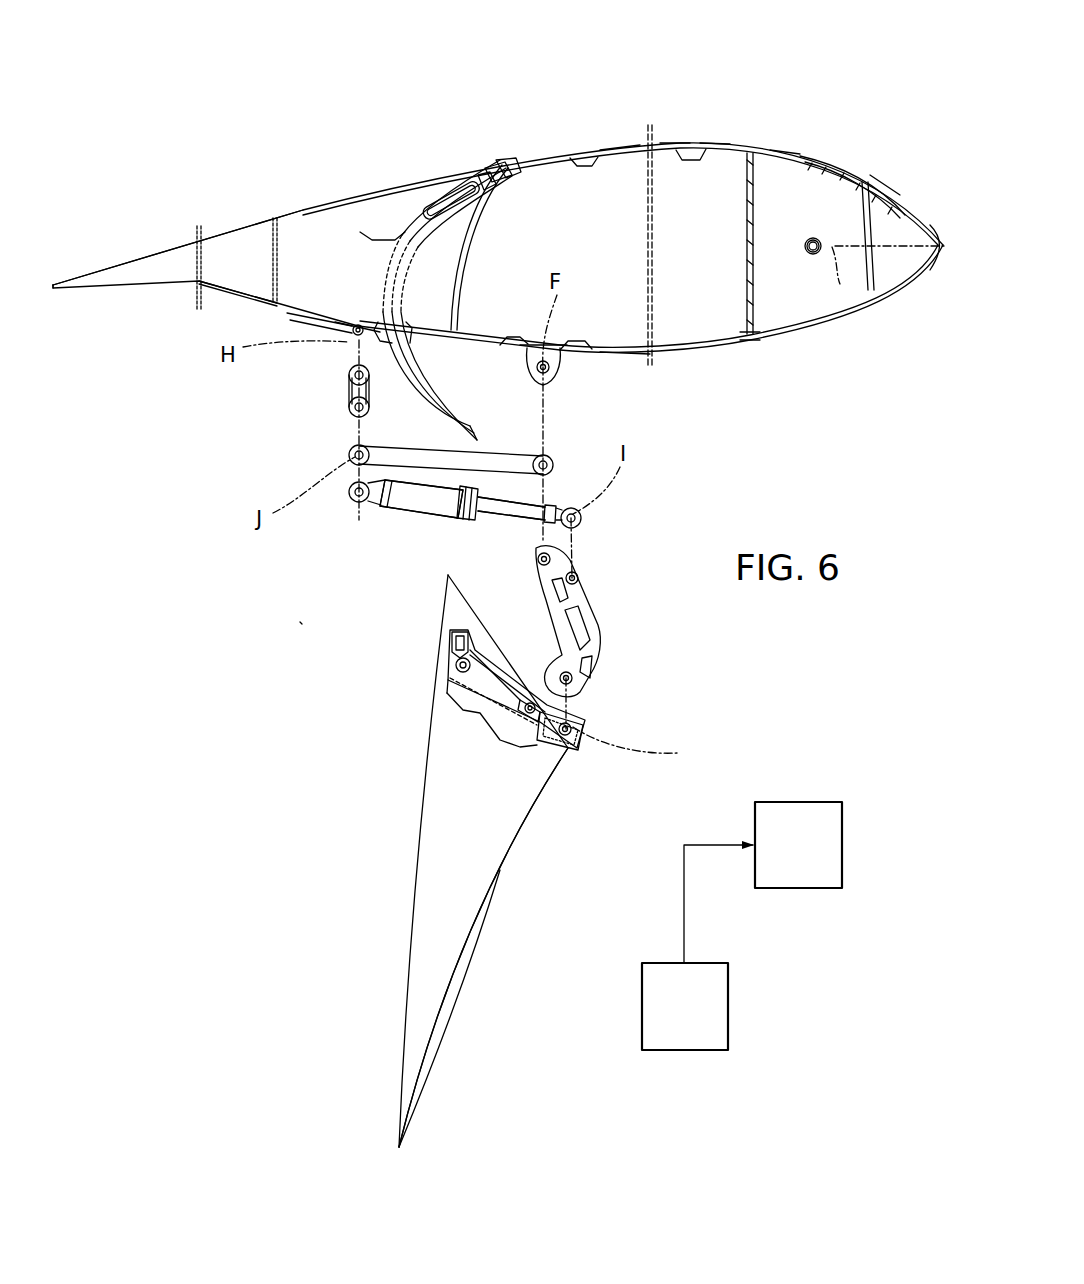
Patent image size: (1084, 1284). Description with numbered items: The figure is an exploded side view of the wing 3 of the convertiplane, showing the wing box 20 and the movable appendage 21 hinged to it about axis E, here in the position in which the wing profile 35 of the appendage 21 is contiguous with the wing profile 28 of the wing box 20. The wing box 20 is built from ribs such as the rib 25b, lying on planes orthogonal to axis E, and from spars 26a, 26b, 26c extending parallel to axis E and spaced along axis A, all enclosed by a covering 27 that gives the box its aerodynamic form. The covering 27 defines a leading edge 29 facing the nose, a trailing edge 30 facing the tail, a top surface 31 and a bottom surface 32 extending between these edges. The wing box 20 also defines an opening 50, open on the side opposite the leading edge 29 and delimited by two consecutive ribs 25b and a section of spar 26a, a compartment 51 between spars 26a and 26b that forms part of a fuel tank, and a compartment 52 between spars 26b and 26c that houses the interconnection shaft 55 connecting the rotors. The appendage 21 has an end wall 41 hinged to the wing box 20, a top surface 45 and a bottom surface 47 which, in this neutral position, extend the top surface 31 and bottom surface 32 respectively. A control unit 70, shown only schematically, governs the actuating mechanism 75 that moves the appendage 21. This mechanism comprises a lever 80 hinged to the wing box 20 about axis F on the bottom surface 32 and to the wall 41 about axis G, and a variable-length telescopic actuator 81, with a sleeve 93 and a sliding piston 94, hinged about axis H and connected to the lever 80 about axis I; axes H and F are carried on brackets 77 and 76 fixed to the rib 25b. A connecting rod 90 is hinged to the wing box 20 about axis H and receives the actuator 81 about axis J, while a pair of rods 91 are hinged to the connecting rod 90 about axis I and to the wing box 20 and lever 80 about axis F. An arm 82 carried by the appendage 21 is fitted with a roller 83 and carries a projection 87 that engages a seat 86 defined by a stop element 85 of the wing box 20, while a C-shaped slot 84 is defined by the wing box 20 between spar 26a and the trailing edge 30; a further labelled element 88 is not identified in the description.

The wing 3 is at (673, 110).
The wing box 20 is at (787, 132).
The movable appendage 21 is at (477, 850).
The rib 25b is at (168, 266).
The spar 26a is at (500, 219).
The spar 26b is at (748, 294).
The spar 26c is at (843, 222).
The covering 27 is at (618, 137).
The wing profile 28 is at (880, 152).
The leading edge 29 is at (923, 273).
The trailing edge 30 is at (54, 290).
The top surface 31 is at (713, 132).
The bottom surface 32 is at (626, 362).
The wing profile 35 is at (338, 165).
The end wall 41 is at (505, 663).
The top surface 45 is at (296, 203).
The bottom surface 47 is at (217, 307).
The opening 50 is at (403, 197).
The compartment 51 is at (663, 155).
The compartment 52 is at (792, 170).
The interconnection shaft 55 is at (812, 258).
The control unit 70 is at (703, 988).
The actuating mechanism 75 is at (300, 620).
The bracket 76 is at (562, 362).
The bracket 77 is at (333, 328).
The lever 80 is at (636, 587).
The telescopic actuator 81 is at (408, 523).
The arm 82 is at (495, 690).
The roller 83 is at (460, 662).
The slot 84 is at (422, 216).
The stop element 85 is at (487, 168).
The seat 86 is at (476, 226).
The projection 87 is at (455, 640).
The hanging bracket 88 is at (487, 414).
The connecting rod 90 is at (348, 395).
The rod 91 is at (500, 457).
The sleeve 93 is at (393, 503).
The piston 94 is at (503, 512).